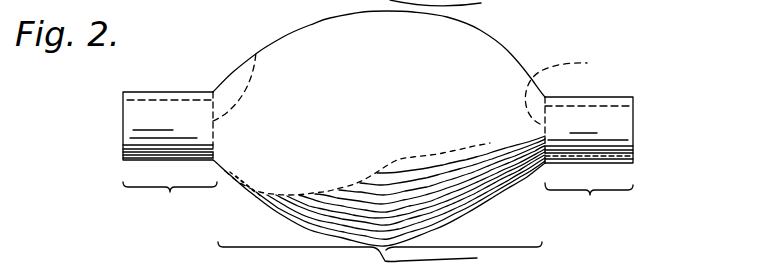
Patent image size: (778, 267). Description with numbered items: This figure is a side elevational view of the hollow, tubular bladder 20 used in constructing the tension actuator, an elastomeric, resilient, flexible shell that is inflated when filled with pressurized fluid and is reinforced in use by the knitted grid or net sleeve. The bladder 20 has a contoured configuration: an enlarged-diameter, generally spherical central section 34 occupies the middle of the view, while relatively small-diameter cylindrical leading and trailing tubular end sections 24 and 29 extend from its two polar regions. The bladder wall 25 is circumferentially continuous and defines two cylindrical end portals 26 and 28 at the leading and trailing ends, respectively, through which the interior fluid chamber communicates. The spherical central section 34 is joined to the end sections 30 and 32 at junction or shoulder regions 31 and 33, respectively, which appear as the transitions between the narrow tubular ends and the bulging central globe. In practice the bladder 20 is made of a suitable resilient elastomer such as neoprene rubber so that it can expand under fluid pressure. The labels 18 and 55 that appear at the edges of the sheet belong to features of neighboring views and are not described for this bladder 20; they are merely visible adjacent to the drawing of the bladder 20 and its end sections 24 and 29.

The adjacent figure element 18 is at (449, 8).
The hollow tubular bladder 20 is at (527, 49).
The leading tubular end section 24 is at (125, 110).
The bladder wall 25 is at (305, 43).
The leading end portal 26 is at (125, 135).
The trailing end portal 28 is at (603, 106).
The trailing tubular end section 29 is at (622, 132).
The end section 30 is at (170, 200).
The junction or shoulder region 31 is at (254, 52).
The end section 32 is at (589, 200).
The junction or shoulder region 33 is at (574, 87).
The generally spherical central section 34 is at (381, 201).
The adjacent figure element 55 is at (627, 265).